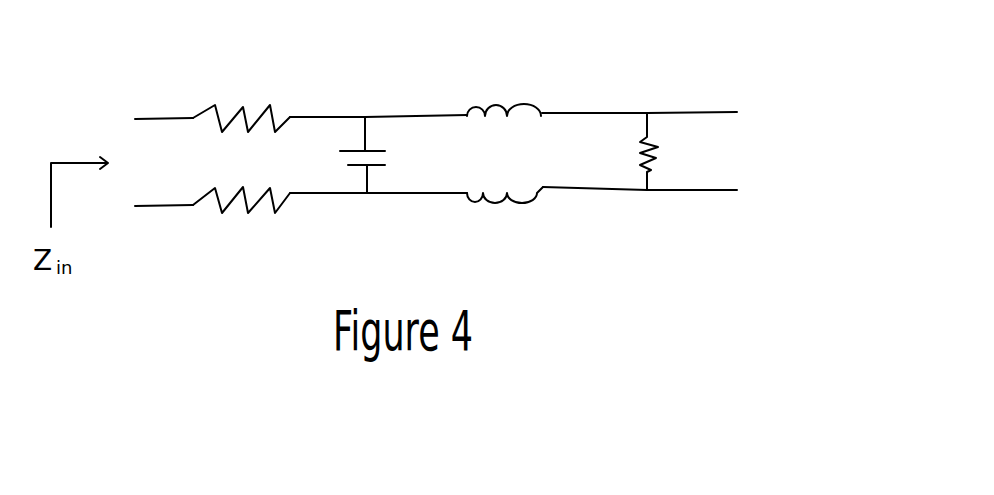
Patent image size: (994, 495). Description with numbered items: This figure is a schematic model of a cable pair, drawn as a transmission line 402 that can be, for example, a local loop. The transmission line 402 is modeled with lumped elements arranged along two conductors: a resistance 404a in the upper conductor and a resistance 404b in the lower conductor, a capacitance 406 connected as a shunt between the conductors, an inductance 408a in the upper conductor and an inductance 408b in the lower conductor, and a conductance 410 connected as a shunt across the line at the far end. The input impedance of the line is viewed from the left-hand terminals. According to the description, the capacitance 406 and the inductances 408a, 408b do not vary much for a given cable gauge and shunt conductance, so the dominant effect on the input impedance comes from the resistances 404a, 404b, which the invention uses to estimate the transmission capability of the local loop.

The transmission line 402 is at (699, 61).
The resistance 404a is at (273, 88).
The resistance 404b is at (273, 220).
The capacitance 406 is at (382, 138).
The inductance 408a is at (503, 92).
The inductance 408b is at (514, 221).
The conductance 410 is at (663, 138).